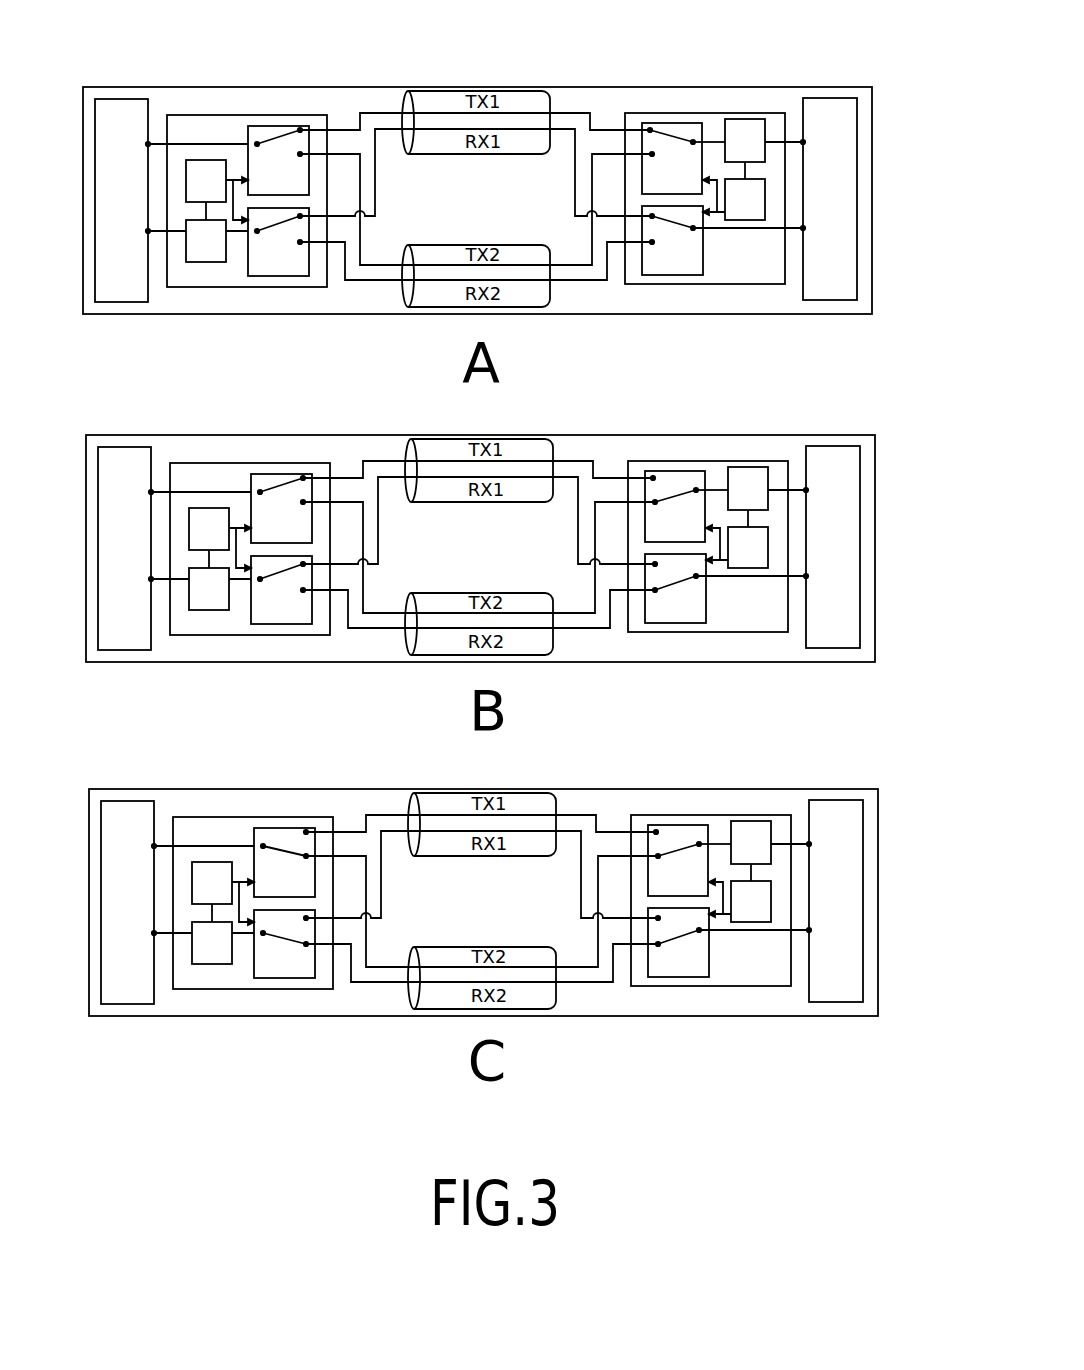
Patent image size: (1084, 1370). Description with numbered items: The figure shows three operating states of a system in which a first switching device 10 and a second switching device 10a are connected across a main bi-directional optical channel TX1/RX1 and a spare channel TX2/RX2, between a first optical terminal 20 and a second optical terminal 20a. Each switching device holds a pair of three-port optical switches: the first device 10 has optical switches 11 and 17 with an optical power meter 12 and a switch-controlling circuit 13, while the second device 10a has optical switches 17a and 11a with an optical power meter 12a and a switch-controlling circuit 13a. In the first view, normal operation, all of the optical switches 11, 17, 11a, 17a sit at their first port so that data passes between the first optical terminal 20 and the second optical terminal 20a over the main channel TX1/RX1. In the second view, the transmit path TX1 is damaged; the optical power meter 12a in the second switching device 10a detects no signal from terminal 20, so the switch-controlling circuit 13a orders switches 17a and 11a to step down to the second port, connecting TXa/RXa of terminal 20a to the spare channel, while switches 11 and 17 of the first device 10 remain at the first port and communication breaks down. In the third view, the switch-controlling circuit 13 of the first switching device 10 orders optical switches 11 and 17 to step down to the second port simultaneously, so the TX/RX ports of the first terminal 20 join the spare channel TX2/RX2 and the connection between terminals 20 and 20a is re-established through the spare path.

In FIG. 3A, the switching device 10 is at (242, 115).
In FIG. 3B, the switching device 10 is at (250, 512).
In FIG. 3C, the switching device 10 is at (253, 864).
In FIG. 3A, the optical switch 11 is at (272, 128).
In FIG. 3B, the optical switch 11 is at (287, 461).
In FIG. 3C, the optical switch 11 is at (298, 818).
In FIG. 3A, the optical power meter 12 is at (206, 260).
In FIG. 3B, the optical power meter 12 is at (209, 644).
In FIG. 3C, the optical power meter 12 is at (212, 1023).
In FIG. 3A, the switch-controlling circuit 13 is at (205, 170).
In FIG. 3B, the switch-controlling circuit 13 is at (195, 465).
In FIG. 3C, the switch-controlling circuit 13 is at (177, 821).
In FIG. 3A, the optical switch 17 is at (280, 275).
In FIG. 3B, the optical switch 17 is at (281, 638).
In FIG. 3C, the optical switch 17 is at (284, 1011).
In FIG. 3A, the optical terminal 20 is at (122, 300).
In FIG. 3B, the optical terminal 20 is at (124, 590).
In FIG. 3C, the optical terminal 20 is at (127, 962).
In FIG. 3A, the switching device 10a is at (705, 113).
In FIG. 3B, the switching device 10a is at (708, 504).
In FIG. 3C, the switching device 10a is at (711, 860).
In FIG. 3A, the optical switch 11a is at (673, 275).
In FIG. 3B, the optical switch 11a is at (675, 638).
In FIG. 3C, the optical switch 11a is at (678, 997).
In FIG. 3A, the optical power meter 12a is at (743, 127).
In FIG. 3B, the optical power meter 12a is at (769, 444).
In FIG. 3C, the optical power meter 12a is at (770, 799).
In FIG. 3B, the switch-controlling circuit 13a is at (747, 625).
In FIG. 3C, the switch-controlling circuit 13a is at (745, 979).
In FIG. 3A, the optical switch 17a is at (668, 123).
In FIG. 3B, the optical switch 17a is at (674, 459).
In FIG. 3C, the optical switch 17a is at (663, 817).
In FIG. 3A, the optical terminal 20a is at (833, 300).
In FIG. 3B, the optical terminal 20a is at (835, 584).
In FIG. 3C, the optical terminal 20a is at (847, 941).